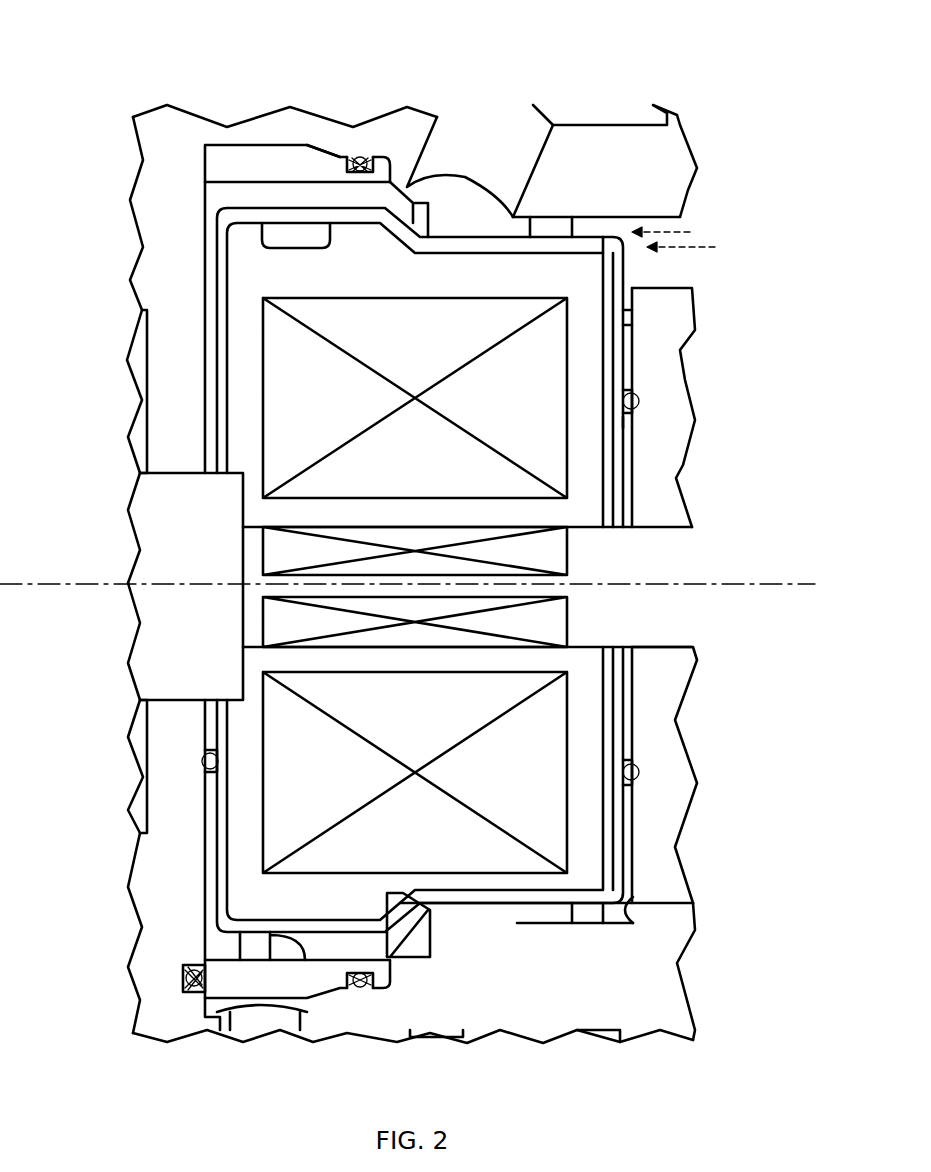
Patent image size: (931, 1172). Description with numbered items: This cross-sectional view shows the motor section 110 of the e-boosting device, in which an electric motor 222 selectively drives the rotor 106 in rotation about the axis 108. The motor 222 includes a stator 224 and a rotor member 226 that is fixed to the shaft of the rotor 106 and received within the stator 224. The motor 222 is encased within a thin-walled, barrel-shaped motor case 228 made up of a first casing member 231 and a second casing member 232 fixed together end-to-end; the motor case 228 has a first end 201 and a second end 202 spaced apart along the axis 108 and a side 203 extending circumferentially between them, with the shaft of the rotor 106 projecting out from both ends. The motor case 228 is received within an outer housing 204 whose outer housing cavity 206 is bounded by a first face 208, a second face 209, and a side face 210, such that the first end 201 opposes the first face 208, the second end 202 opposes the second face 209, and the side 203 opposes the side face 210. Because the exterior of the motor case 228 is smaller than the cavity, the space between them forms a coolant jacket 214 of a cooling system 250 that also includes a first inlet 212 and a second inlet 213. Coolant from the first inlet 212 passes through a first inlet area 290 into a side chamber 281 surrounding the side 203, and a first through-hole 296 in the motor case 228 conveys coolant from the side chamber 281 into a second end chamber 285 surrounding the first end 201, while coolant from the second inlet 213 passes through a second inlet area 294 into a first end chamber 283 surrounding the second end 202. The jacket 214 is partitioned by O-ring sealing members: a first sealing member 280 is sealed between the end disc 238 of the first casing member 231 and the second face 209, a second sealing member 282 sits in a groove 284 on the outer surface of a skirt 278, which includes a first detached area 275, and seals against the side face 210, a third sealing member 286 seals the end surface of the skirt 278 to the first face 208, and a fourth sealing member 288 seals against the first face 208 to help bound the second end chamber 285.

The motor section 110 is at (218, 102).
The rotor 106 is at (648, 634).
The axis 108 is at (797, 583).
The stator 224 is at (415, 303).
The rotor member 226 is at (415, 535).
The first through-hole 296 is at (267, 197).
The groove 284 is at (353, 163).
The first detached area 275 is at (308, 157).
The second end chamber 285 is at (207, 243).
The first end 201 is at (223, 340).
The side chamber 281 is at (413, 200).
The first inlet 212 is at (470, 192).
The first inlet area 290 is at (517, 231).
The side 203 is at (543, 250).
The motor case 228 is at (593, 246).
The cooling system 250 is at (655, 210).
The second inlet 213 is at (676, 282).
The second inlet area 294 is at (628, 300).
The first end chamber 283 is at (628, 327).
The second end 202 is at (627, 373).
The first sealing member 280 is at (635, 402).
The end disc 238 is at (617, 692).
The electric motor 222 is at (563, 695).
The first casing member 231 is at (628, 814).
The second face 209 is at (617, 905).
The fourth sealing member 288 is at (207, 760).
The second casing member 232 is at (225, 817).
The first face 208 is at (213, 884).
The side face 210 is at (520, 903).
The outer housing cavity 206 is at (543, 905).
The coolant jacket 214 is at (453, 928).
The third sealing member 286 is at (190, 976).
The second sealing member 282 is at (357, 988).
The skirt 278 is at (258, 1012).
The outer housing 204 is at (592, 1020).